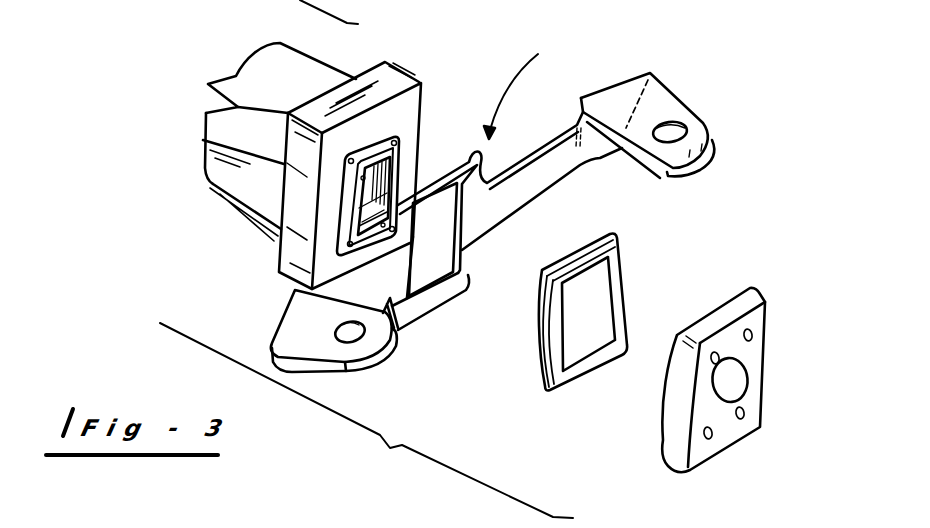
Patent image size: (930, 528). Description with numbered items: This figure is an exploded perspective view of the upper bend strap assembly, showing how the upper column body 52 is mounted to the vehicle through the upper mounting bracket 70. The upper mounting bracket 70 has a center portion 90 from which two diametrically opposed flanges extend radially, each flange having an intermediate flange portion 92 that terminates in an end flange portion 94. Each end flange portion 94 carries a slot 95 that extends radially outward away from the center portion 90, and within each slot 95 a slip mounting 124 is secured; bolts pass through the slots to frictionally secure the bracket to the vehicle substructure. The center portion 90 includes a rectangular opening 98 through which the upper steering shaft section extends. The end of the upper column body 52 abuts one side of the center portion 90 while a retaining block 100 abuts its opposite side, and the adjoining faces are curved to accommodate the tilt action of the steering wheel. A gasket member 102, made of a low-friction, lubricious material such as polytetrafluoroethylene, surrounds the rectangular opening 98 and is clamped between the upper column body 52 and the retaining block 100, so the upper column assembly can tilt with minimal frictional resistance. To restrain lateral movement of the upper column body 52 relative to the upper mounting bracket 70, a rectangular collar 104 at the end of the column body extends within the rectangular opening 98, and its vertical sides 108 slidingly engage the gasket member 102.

The upper column body 52 is at (405, 71).
The upper mounting bracket 70 is at (526, 85).
The center portion 90 is at (456, 168).
The intermediate flange portion 92 is at (580, 102).
The end flange portion 94 is at (683, 97).
The slot 95 is at (703, 130).
The rectangular opening 98 is at (472, 264).
The retaining block 100 is at (762, 302).
The gasket member 102 is at (624, 265).
The rectangular collar 104 is at (384, 222).
The vertical sides 108 is at (345, 198).
The slip mounting 124 is at (697, 128).